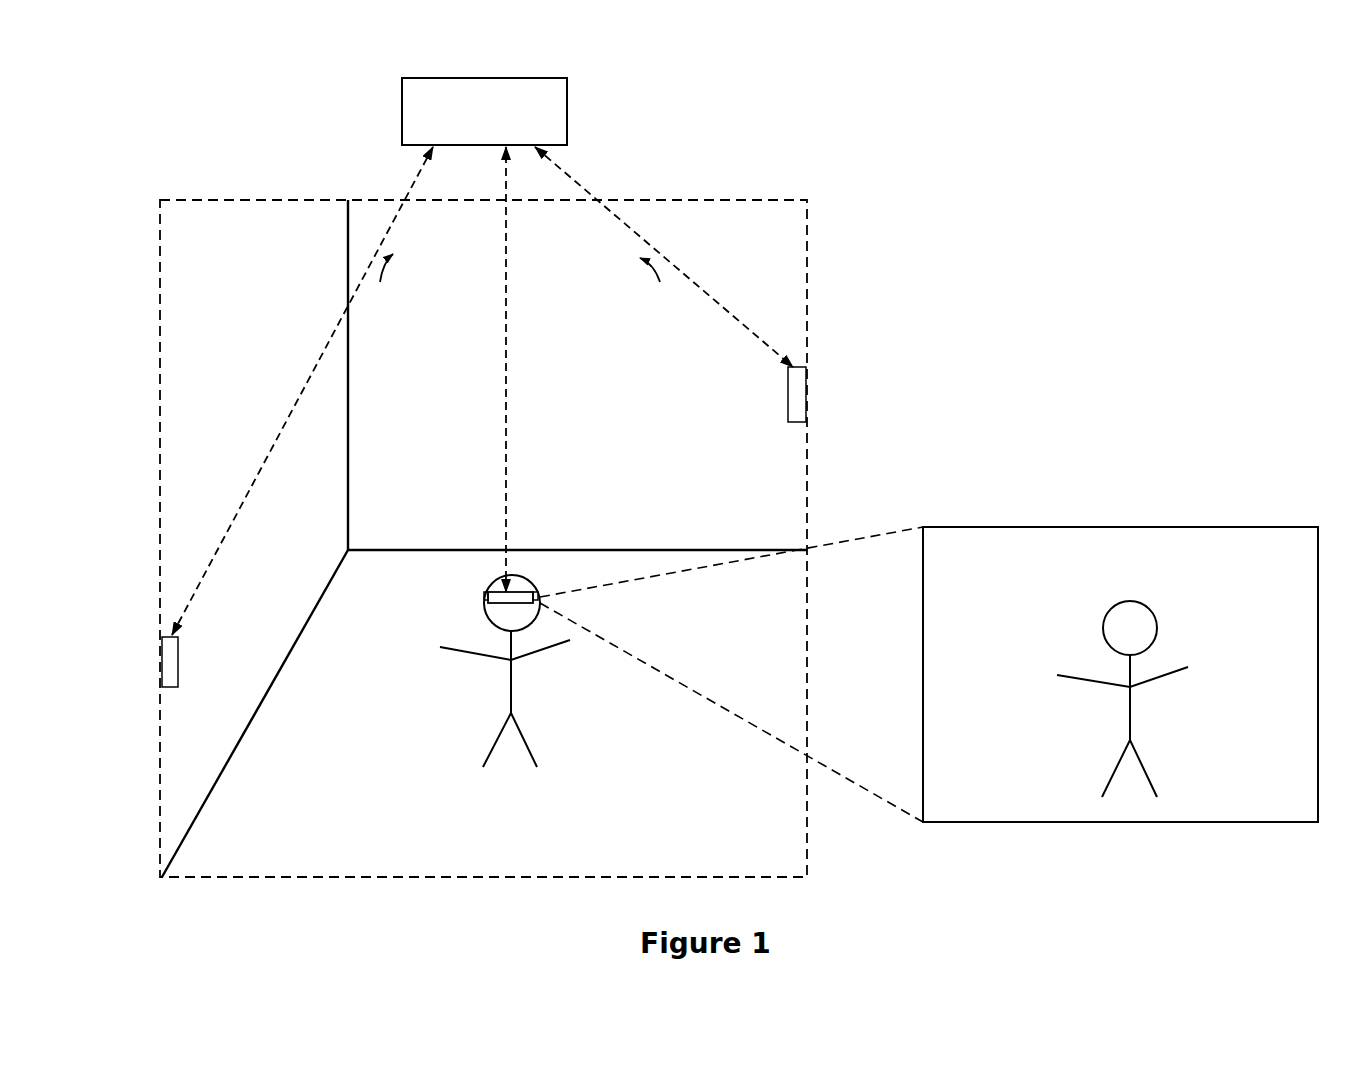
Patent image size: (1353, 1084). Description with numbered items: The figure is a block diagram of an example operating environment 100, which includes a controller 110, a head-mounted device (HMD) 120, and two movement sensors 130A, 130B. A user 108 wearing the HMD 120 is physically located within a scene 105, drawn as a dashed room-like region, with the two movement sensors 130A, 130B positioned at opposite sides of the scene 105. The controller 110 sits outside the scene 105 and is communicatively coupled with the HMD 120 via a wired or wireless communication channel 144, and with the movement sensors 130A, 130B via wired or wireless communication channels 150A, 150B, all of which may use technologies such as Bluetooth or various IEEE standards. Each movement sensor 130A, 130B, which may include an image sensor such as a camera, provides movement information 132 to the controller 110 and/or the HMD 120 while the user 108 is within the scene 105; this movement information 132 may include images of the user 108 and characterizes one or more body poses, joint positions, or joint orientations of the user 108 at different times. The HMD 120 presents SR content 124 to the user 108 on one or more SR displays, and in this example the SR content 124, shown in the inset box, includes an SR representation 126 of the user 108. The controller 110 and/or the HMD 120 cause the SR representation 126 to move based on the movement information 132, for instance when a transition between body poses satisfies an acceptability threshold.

The operating environment 100 is at (188, 82).
The controller 110 is at (556, 124).
The scene 105 is at (274, 234).
The user 108 is at (490, 750).
The head-mounted device (HMD) 120 is at (513, 592).
The SR content 124 is at (1197, 561).
The SR representation 126 is at (1147, 773).
The movement sensor 130A is at (806, 388).
The movement sensor 130B is at (162, 655).
The movement information 132 is at (520, 297).
The communication channel 144 is at (506, 317).
The communication channel 150A is at (686, 269).
The communication channel 150B is at (292, 416).